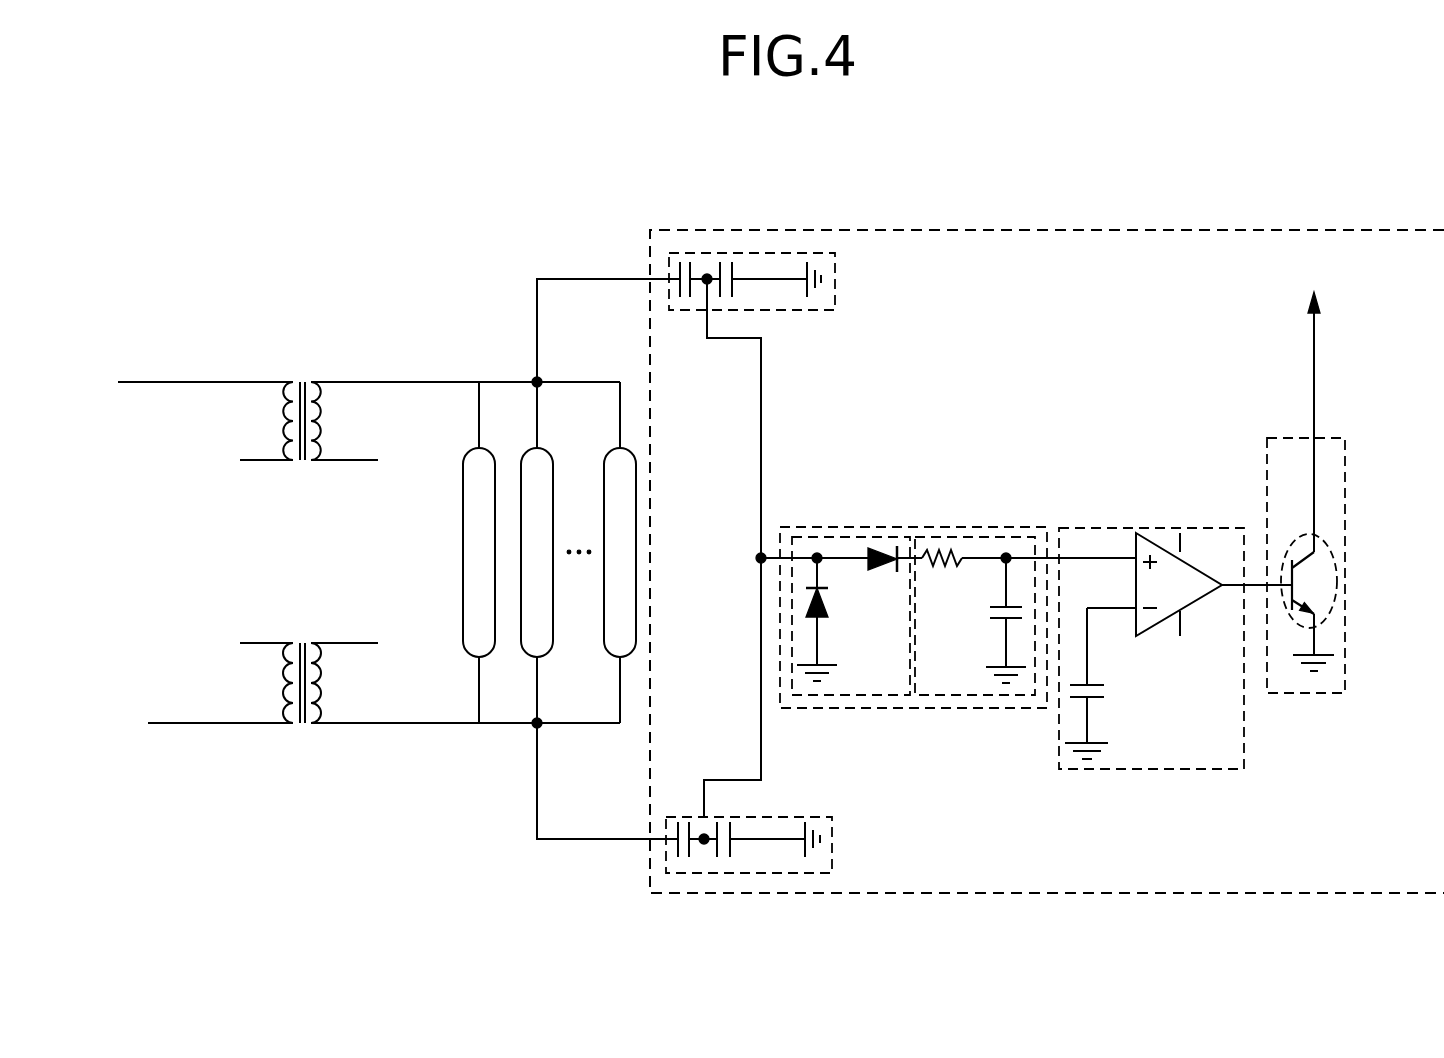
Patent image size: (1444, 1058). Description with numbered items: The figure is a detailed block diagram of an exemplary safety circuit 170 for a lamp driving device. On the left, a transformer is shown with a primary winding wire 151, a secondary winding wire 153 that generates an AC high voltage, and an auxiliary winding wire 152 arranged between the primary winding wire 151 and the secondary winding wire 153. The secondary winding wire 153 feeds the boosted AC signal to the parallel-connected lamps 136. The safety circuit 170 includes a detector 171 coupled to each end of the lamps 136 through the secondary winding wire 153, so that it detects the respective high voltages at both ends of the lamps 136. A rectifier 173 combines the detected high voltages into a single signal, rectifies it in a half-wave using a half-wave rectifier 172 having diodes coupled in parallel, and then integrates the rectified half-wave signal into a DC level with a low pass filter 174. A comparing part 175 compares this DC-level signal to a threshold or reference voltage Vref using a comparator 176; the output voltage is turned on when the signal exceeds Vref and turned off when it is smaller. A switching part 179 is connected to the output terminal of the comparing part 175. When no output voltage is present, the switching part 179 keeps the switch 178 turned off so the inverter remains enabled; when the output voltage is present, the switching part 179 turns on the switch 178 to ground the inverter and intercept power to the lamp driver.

The lamps 136 is at (463, 552).
The primary winding wire 151 is at (244, 382).
The auxiliary winding wire 152 is at (308, 381).
The secondary winding wire 153 is at (316, 382).
The safety circuit 170 is at (1052, 230).
The detector 171 is at (836, 281).
The half-wave rectifier 172 is at (890, 537).
The rectifier 173 is at (815, 527).
The low pass filter 174 is at (1012, 537).
The comparing part 175 is at (1085, 528).
The comparator 176 is at (1193, 561).
The switch 178 is at (1338, 578).
The switching part 179 is at (1268, 438).